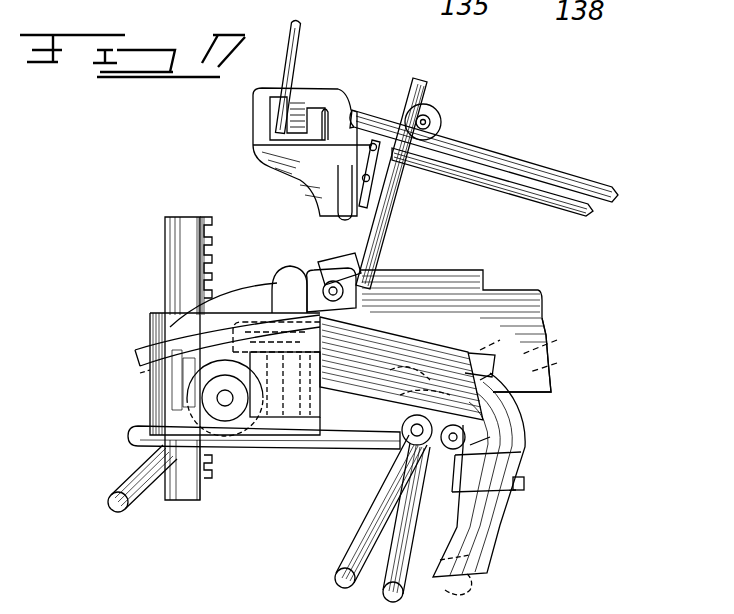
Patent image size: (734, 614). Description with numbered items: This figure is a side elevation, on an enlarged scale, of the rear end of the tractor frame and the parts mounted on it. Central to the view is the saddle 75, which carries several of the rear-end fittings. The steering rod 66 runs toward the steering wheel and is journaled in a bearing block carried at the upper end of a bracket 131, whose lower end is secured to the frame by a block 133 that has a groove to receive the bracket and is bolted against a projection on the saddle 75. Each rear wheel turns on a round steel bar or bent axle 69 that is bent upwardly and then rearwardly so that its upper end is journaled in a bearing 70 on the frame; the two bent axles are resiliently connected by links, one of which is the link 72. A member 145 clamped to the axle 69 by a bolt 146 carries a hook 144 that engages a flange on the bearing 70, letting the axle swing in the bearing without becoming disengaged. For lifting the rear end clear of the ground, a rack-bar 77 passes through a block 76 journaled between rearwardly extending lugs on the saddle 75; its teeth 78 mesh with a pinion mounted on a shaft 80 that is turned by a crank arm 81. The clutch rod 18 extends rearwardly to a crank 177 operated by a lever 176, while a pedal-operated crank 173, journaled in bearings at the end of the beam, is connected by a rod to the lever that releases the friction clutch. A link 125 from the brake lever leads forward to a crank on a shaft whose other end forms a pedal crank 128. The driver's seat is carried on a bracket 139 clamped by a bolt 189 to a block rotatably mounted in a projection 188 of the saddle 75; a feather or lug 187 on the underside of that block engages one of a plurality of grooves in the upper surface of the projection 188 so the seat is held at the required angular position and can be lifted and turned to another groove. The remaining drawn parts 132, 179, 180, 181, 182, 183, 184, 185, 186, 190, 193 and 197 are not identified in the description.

The clutch rod 18 is at (557, 364).
The steering rod 66 is at (483, 153).
The bent axle 69 is at (490, 535).
The bearing 70 is at (378, 356).
The link 72 is at (510, 307).
The saddle 75 is at (390, 286).
The block 76 is at (160, 390).
The rack-bar 77 is at (180, 260).
The teeth 78 is at (213, 242).
The shaft 80 is at (226, 406).
The crank arm 81 is at (118, 506).
The link 125 is at (500, 340).
The pedal crank 128 is at (345, 578).
The bracket 131 is at (424, 84).
The pivot 132 is at (441, 124).
The block 133 is at (320, 262).
The bracket 139 is at (140, 346).
The hook 144 is at (490, 437).
The member 145 is at (521, 452).
The bolt 146 is at (524, 484).
The pedal-operated crank 173 is at (403, 594).
The lever 176 is at (343, 449).
The crank 177 is at (390, 398).
The lever 179 is at (518, 198).
The lever end 180 is at (348, 110).
The bracket body 181 is at (270, 110).
The slot 182 is at (297, 130).
The rod 183 is at (300, 42).
The bracket slot 184 is at (292, 162).
The guide bar 185 is at (323, 110).
The notch 186 is at (343, 200).
The lug 187 is at (140, 374).
The projection 188 is at (313, 445).
The bolt 189 is at (272, 307).
The block 190 is at (273, 430).
The link 193 is at (493, 374).
The link 197 is at (557, 341).